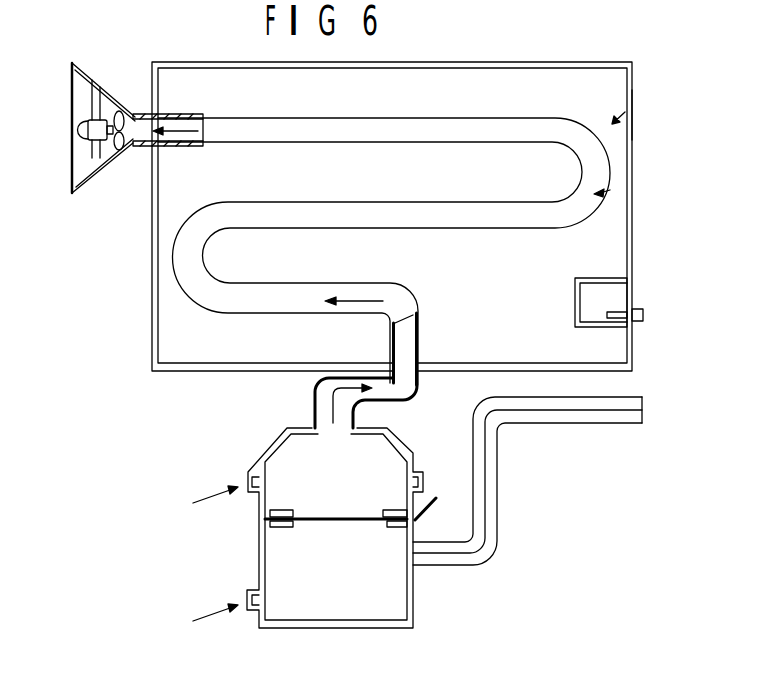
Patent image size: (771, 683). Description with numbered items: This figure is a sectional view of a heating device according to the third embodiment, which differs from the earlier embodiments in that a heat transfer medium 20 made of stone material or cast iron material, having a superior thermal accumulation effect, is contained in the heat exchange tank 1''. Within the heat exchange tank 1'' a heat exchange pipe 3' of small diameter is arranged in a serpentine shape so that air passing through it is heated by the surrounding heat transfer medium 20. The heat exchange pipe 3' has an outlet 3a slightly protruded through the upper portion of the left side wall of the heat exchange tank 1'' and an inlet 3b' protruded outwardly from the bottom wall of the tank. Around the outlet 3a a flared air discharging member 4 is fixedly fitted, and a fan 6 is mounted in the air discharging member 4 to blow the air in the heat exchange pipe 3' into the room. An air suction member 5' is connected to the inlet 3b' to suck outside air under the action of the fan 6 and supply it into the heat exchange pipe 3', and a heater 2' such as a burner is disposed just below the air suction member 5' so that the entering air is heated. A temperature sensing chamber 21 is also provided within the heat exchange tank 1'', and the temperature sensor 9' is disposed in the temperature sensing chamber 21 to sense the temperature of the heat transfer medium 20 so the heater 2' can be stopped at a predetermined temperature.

The heat exchange tank 1'' is at (392, 191).
The heat transfer medium 20 is at (634, 114).
The heat exchange pipe 3' is at (450, 251).
The outlet 3a is at (136, 116).
The air discharging member 4 is at (93, 78).
The fan 6 is at (72, 151).
The temperature sensing chamber 21 is at (612, 293).
The control knob 9' is at (655, 317).
The inlet 3b' is at (586, 462).
The air suction member 5' is at (298, 408).
The heater 2' is at (282, 528).